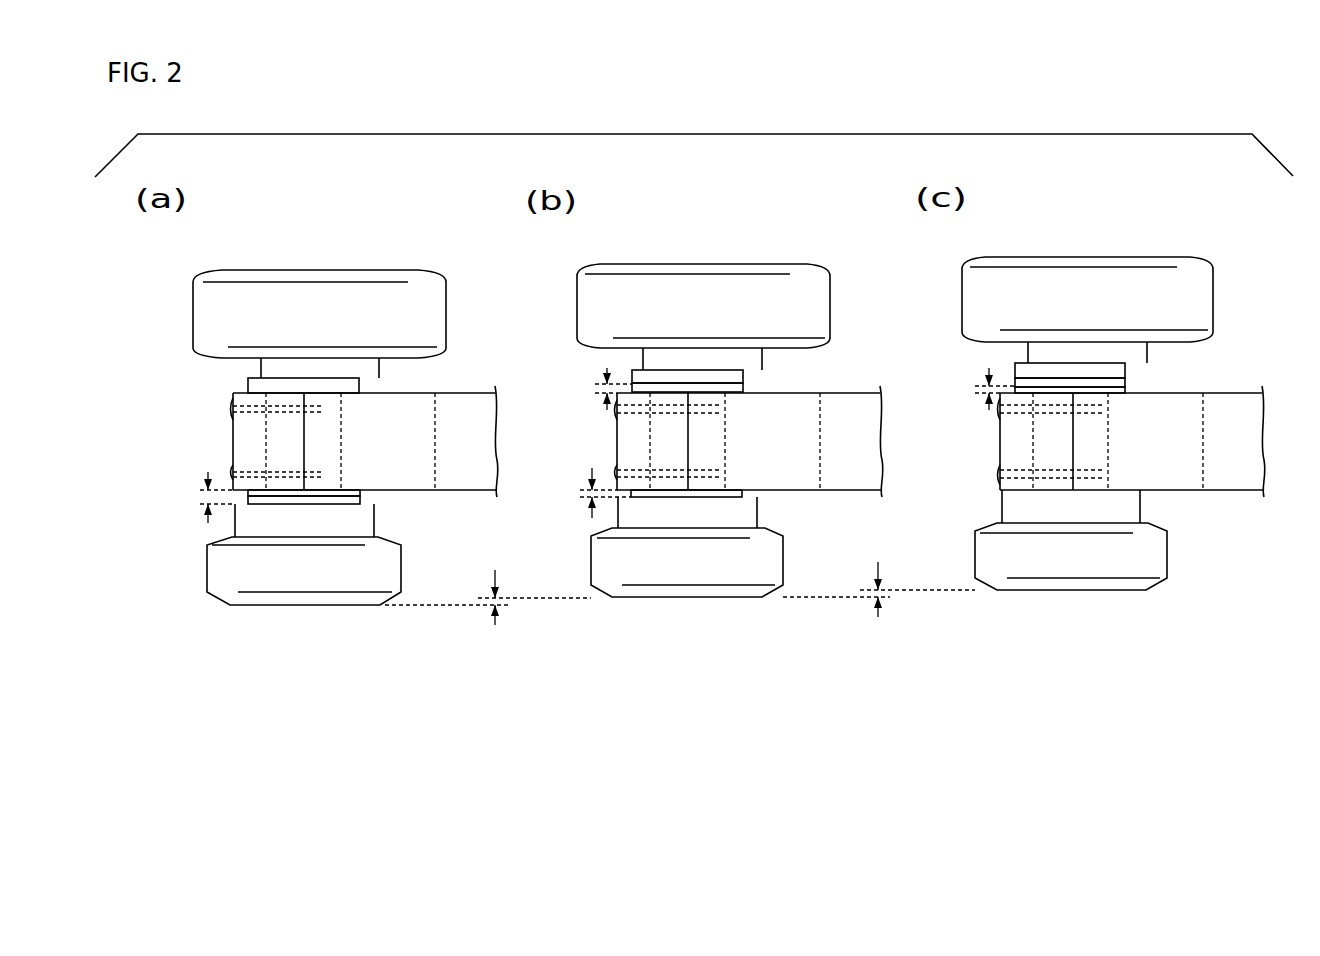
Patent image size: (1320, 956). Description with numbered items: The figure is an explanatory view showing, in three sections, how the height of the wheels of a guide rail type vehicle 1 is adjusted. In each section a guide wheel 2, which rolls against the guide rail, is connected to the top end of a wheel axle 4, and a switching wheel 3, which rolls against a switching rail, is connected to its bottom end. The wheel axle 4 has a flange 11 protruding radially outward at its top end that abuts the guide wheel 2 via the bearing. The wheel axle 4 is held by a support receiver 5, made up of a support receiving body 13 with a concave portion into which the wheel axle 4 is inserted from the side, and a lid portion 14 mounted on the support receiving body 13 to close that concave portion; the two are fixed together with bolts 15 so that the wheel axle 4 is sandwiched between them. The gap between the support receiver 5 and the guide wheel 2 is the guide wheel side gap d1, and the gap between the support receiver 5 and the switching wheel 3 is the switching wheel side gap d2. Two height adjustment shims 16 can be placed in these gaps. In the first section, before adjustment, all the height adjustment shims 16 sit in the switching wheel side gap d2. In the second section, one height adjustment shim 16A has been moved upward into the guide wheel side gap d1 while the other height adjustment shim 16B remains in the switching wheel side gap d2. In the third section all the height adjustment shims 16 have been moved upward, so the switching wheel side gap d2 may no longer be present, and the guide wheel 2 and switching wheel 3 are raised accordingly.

The guide rail type vehicle 1 is at (357, 247).
The guide wheel 2 is at (253, 270).
The switching wheel 3 is at (270, 605).
The wheel axle 4 is at (340, 450).
The support receiver 5 is at (430, 389).
The flange 11 is at (248, 386).
The support receiving body 13 is at (423, 488).
The lid portion 14 is at (235, 438).
The bolts 15 is at (233, 410).
The height adjustment shims 16 is at (360, 493).
The height adjustment shim 16A is at (743, 392).
The height adjustment shim 16B is at (742, 492).
The guide wheel side gap d1 is at (598, 386).
The switching wheel side gap d2 is at (208, 498).